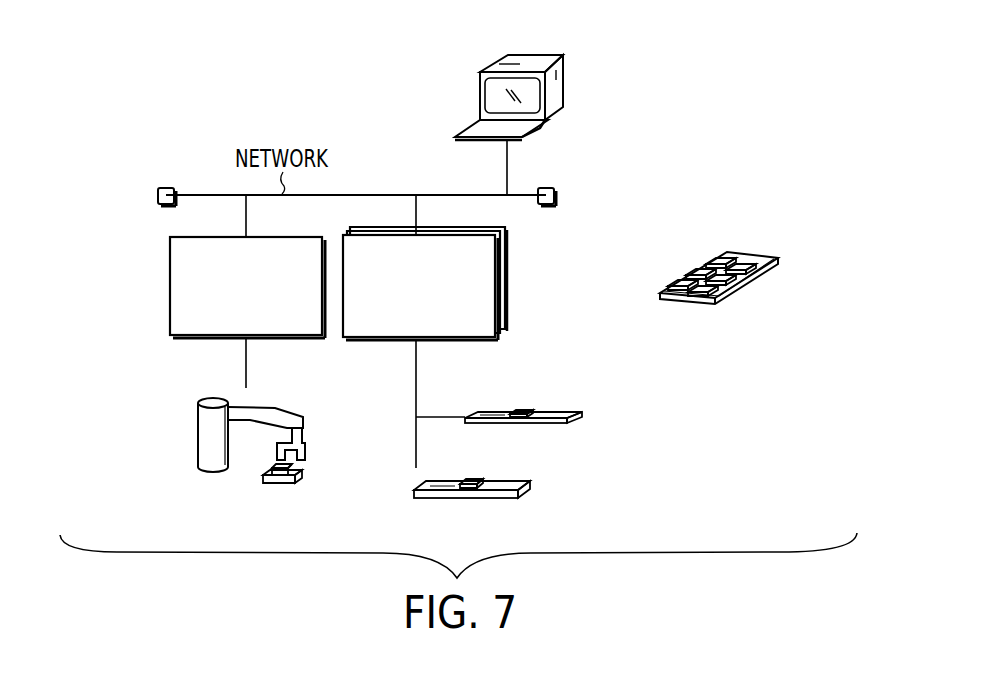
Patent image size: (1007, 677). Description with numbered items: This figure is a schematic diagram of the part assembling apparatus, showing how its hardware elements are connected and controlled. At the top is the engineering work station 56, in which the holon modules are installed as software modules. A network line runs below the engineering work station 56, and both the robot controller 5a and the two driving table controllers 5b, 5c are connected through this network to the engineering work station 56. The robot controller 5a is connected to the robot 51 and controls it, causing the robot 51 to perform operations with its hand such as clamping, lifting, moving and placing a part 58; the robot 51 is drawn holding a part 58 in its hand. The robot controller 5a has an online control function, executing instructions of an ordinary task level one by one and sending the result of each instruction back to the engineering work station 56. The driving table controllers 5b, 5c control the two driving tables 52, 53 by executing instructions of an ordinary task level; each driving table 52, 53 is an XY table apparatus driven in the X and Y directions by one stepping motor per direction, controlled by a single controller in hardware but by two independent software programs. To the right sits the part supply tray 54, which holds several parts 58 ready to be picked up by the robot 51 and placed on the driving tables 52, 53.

The engineering work station 56 is at (480, 83).
The robot controller 5a is at (170, 295).
The driving table controller 5b is at (503, 262).
The driving table controller 5c is at (496, 288).
The robot 51 is at (208, 469).
The part 58 is at (297, 485).
The part supply tray 54 is at (705, 303).
The driving table 52 is at (582, 413).
The driving table 53 is at (530, 482).